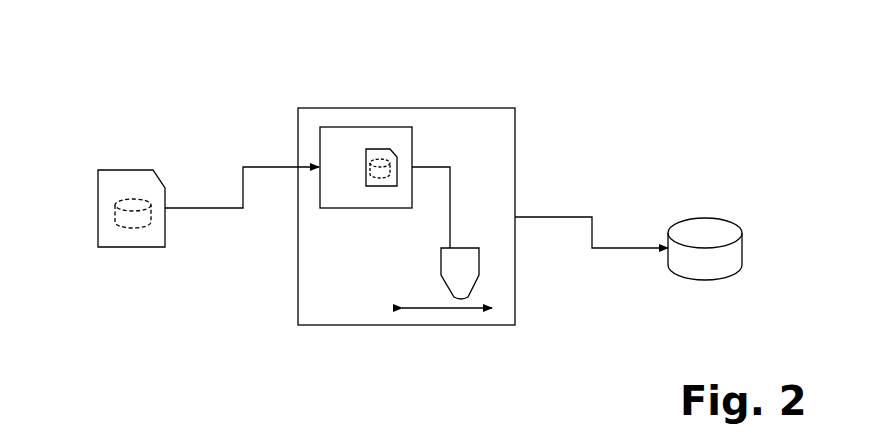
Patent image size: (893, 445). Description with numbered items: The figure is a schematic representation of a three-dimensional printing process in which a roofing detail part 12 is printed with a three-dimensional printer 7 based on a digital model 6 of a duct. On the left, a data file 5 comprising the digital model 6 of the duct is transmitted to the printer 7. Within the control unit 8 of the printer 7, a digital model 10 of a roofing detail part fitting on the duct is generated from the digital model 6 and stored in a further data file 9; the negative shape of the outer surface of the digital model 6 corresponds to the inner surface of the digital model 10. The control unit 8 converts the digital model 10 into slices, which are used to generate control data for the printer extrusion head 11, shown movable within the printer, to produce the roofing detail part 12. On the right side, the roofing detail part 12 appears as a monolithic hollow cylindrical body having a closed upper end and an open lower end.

The data file 5 is at (112, 183).
The digital model of the duct 6 is at (118, 222).
The 3D printer 7 is at (484, 113).
The control unit 8 is at (333, 127).
The further data file 9 is at (388, 152).
The digital model of the roofing detail part 10 is at (373, 160).
The printer extrusion head 11 is at (470, 268).
The roofing detail part 12 is at (706, 228).